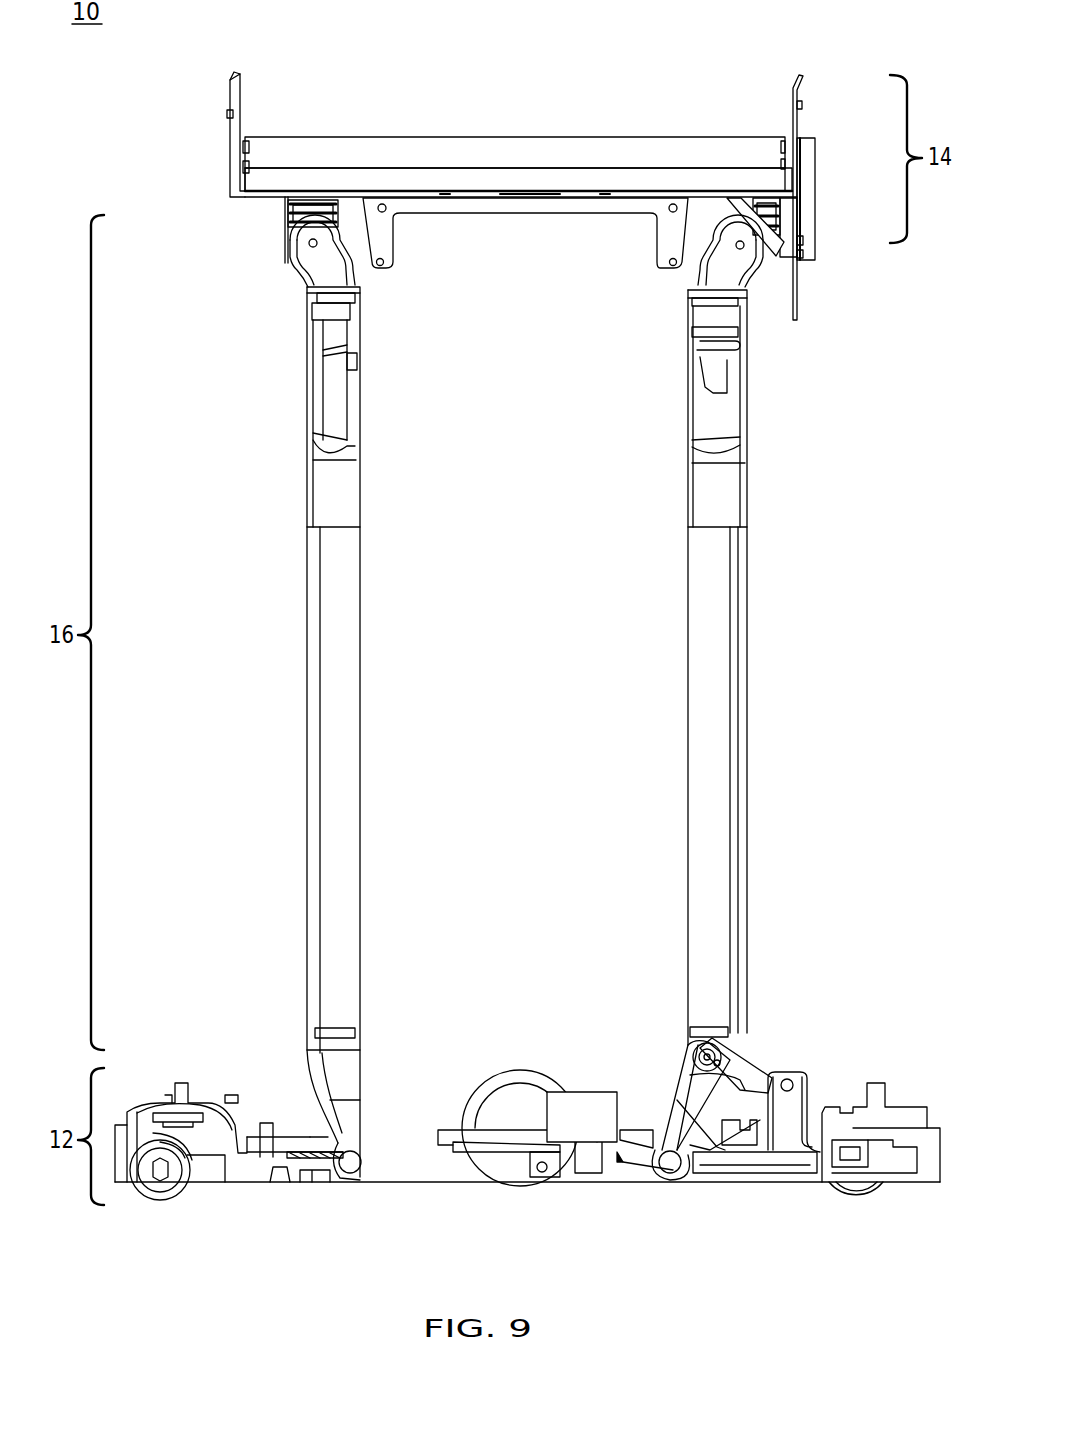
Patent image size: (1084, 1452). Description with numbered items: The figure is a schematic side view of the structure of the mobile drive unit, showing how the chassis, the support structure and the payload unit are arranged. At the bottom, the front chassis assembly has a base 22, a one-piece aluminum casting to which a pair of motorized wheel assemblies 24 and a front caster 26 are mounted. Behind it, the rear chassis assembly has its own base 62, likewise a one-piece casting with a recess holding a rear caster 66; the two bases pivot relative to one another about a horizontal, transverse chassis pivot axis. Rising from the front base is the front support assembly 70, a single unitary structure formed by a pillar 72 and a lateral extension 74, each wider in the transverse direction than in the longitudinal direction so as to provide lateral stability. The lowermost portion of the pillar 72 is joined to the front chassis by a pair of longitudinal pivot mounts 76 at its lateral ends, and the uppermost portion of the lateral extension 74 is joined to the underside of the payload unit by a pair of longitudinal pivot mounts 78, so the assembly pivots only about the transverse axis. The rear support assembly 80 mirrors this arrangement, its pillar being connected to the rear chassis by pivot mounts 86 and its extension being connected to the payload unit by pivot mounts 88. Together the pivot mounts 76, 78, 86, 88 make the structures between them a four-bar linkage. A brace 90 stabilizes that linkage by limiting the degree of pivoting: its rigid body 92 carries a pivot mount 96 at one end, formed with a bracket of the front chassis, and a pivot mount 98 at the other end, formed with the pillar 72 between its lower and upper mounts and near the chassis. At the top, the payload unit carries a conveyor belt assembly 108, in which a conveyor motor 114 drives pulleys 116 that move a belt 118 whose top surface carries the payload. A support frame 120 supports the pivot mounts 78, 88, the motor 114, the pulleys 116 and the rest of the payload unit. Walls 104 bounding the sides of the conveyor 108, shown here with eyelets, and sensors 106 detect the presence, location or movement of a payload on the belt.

The base 22 is at (629, 1183).
The motorized wheel assemblies 24 is at (513, 1100).
The front caster 26 is at (861, 1197).
The base 62 is at (246, 1183).
The rear caster 66 is at (160, 1198).
The front support assembly 70 is at (727, 591).
The pillar 72 is at (716, 684).
The lateral extension 74 is at (752, 290).
The longitudinal pivot mounts 76 is at (679, 1183).
The longitudinal pivot mounts 78 is at (745, 246).
The rear support assembly 80 is at (336, 684).
The longitudinal pivot mounts 86 is at (356, 1183).
The longitudinal pivot mounts 88 is at (310, 243).
The brace 90 is at (755, 1065).
The body 92 is at (758, 1068).
The pivot mount 96 is at (793, 1086).
The pivot mount 98 is at (693, 1058).
The walls 104 is at (227, 113).
The sensors 106 is at (229, 78).
The conveyor belt assembly 108 is at (481, 137).
The conveyor motor 114 is at (782, 208).
The pulleys 116 is at (816, 152).
The belt 118 is at (515, 179).
The support frame 120 is at (288, 209).